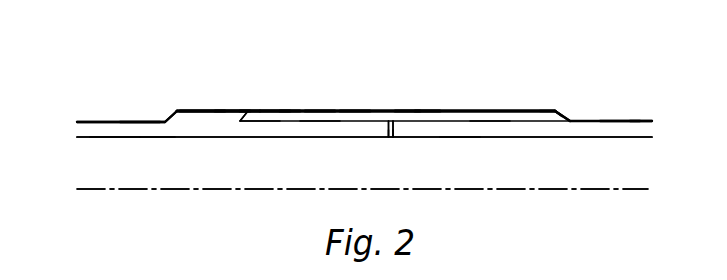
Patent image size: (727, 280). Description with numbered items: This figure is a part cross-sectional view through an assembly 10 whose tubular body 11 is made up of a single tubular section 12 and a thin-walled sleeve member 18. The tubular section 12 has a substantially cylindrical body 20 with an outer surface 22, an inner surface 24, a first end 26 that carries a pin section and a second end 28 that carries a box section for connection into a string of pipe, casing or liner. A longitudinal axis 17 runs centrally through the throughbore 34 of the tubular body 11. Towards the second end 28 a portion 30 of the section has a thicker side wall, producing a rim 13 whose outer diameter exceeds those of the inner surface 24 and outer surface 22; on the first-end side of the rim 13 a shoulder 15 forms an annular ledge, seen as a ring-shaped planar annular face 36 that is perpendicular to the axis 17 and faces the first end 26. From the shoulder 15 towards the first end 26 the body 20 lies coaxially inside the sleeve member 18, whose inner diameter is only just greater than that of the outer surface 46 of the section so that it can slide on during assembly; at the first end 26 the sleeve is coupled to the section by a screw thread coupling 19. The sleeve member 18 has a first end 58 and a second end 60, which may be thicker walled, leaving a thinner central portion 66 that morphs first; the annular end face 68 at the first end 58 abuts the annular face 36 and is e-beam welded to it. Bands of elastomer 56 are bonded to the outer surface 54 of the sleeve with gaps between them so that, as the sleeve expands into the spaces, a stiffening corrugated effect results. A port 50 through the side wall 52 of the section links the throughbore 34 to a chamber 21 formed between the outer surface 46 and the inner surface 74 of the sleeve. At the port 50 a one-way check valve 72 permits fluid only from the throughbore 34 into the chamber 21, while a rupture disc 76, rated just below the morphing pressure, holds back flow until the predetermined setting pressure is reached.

The assembly 10 is at (477, 93).
The tubular body 11 is at (650, 118).
The tubular section 12 is at (75, 151).
The rim 13 is at (231, 110).
The shoulder 15 is at (247, 110).
The longitudinal axis 17 is at (302, 191).
The sleeve member 18 is at (290, 110).
The screw thread coupling 19 is at (564, 118).
The cylindrical body 20 is at (138, 132).
The chamber 21 is at (322, 122).
The outer surface 22 is at (172, 112).
The inner surface 24 is at (155, 138).
The first end 26 is at (622, 121).
The second end 28 is at (90, 121).
The portion 30 is at (202, 120).
The throughbore 34 is at (128, 180).
The annular face 36 is at (239, 117).
The outer surface 46 is at (425, 110).
The port 50 is at (389, 123).
The side wall 52 is at (458, 138).
The outer surface 54 is at (357, 110).
The elastomer 56 is at (320, 110).
The first end 58 is at (273, 110).
The second end 60 is at (555, 111).
The central portion 66 is at (408, 110).
The annular end face 68 is at (247, 113).
The check valve 72 is at (390, 138).
The inner surface 74 is at (483, 122).
The rupture disc 76 is at (394, 127).